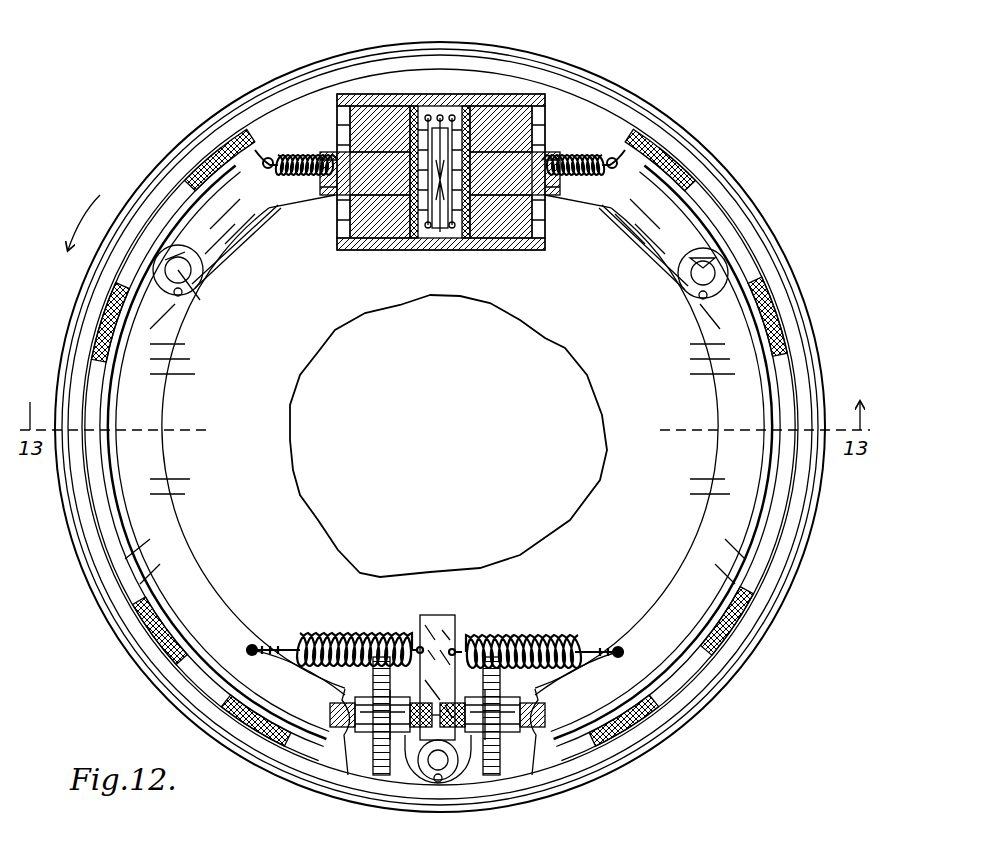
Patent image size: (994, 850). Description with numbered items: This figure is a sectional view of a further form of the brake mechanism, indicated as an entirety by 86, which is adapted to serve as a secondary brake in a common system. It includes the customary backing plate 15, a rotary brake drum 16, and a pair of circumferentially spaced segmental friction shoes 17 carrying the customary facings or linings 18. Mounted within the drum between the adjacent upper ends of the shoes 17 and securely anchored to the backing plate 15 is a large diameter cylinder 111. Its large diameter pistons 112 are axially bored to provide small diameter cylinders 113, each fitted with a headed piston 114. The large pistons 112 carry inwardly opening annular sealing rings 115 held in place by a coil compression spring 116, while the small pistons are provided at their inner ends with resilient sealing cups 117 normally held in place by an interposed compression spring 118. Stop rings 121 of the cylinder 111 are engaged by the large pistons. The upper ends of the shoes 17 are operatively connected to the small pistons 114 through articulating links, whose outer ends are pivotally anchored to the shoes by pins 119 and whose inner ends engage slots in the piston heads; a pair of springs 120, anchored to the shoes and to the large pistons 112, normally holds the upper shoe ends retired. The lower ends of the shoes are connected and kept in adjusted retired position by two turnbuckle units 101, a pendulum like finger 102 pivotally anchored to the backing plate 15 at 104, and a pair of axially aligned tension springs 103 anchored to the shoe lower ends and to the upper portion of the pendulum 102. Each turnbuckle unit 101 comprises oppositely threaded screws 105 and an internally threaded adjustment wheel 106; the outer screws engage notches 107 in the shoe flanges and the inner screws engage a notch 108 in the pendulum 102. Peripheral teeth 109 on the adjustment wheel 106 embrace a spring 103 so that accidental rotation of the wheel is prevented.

The backing plate 15 is at (783, 243).
The rotary brake drum 16 is at (785, 318).
The segmental friction shoes 17 is at (165, 338).
The facings or linings 18 is at (110, 380).
The brake mechanism 86 is at (745, 186).
The turnbuckle units 101 is at (398, 656).
The pendulum like finger 102 is at (440, 620).
The tension springs 103 is at (352, 640).
The pivot anchor 104 is at (445, 770).
The screws 105 is at (505, 740).
The adjustment wheel 106 is at (365, 700).
The notches 107 is at (330, 712).
The notch 108 is at (450, 700).
The teeth 109 is at (380, 660).
The large diameter cylinder 111 is at (412, 107).
The large diameter pistons 112 is at (393, 108).
The small diameter cylinders 113 is at (385, 245).
The headed piston 114 is at (345, 210).
The annular sealing rings 115 is at (430, 112).
The coil compression spring 116 is at (446, 250).
The resilient sealing cups 117 is at (468, 128).
The compression spring 118 is at (262, 262).
The pins 119 is at (195, 290).
The springs 120 is at (300, 160).
The stop rings 121 is at (330, 100).